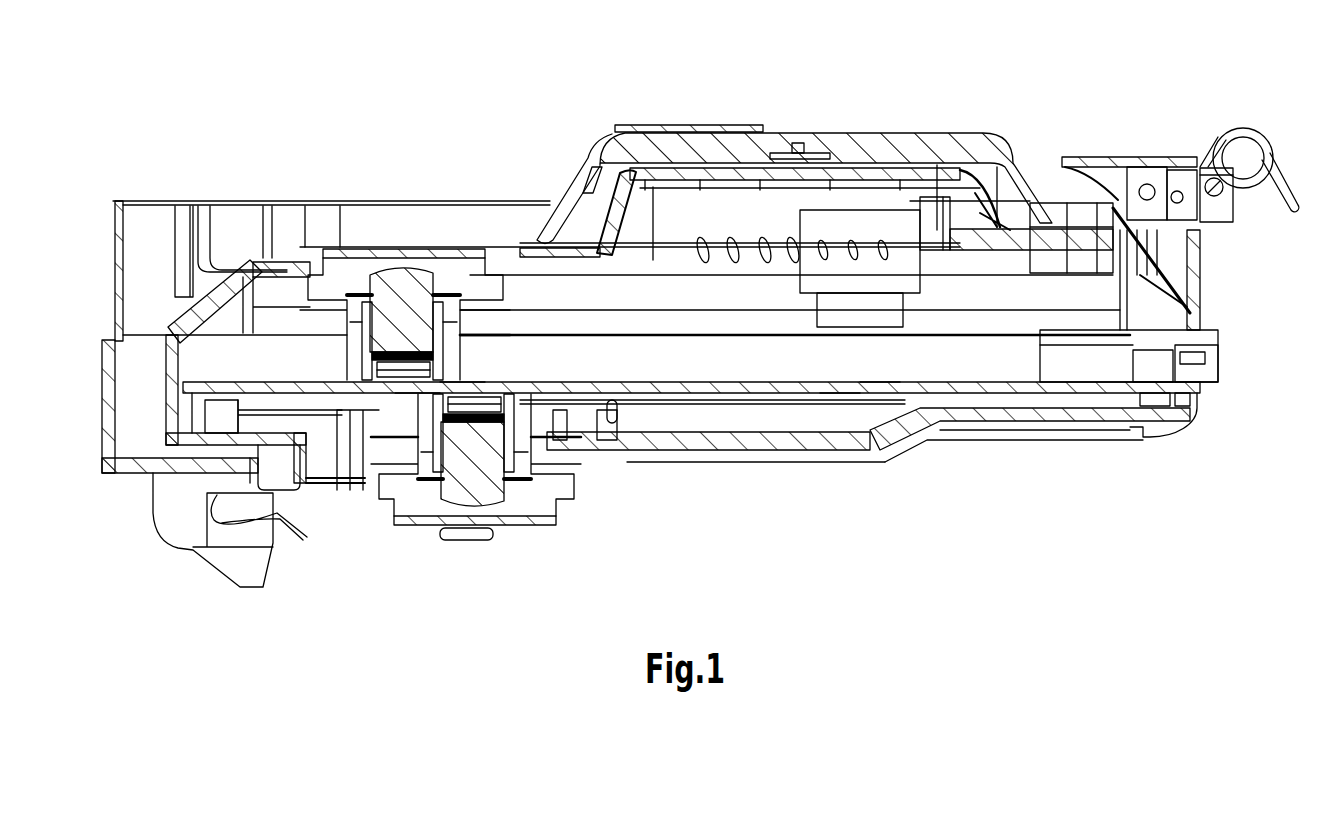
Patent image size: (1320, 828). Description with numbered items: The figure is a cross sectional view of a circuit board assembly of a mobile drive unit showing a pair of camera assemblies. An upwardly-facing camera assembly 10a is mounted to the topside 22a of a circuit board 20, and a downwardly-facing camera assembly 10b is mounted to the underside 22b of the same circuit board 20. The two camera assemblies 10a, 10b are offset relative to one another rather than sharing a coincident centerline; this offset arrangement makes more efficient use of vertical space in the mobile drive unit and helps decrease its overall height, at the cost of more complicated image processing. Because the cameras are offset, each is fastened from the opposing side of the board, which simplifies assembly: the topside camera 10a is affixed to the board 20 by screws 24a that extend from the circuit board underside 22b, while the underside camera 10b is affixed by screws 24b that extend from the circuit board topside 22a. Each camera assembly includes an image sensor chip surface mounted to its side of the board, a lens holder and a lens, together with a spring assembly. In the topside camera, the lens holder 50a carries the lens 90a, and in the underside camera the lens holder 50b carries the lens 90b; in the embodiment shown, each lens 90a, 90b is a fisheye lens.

The upwardly-facing camera assembly 10a is at (481, 181).
The downwardly-facing camera assembly 10b is at (612, 532).
The circuit board 20 is at (957, 388).
The topside 22a is at (878, 369).
The underside 22b is at (840, 393).
The screws 24a is at (400, 397).
The screws 24b is at (462, 378).
The lens holder 50a is at (358, 256).
The lens holder 50b is at (470, 527).
The lens 90a is at (395, 298).
The lens 90b is at (465, 490).